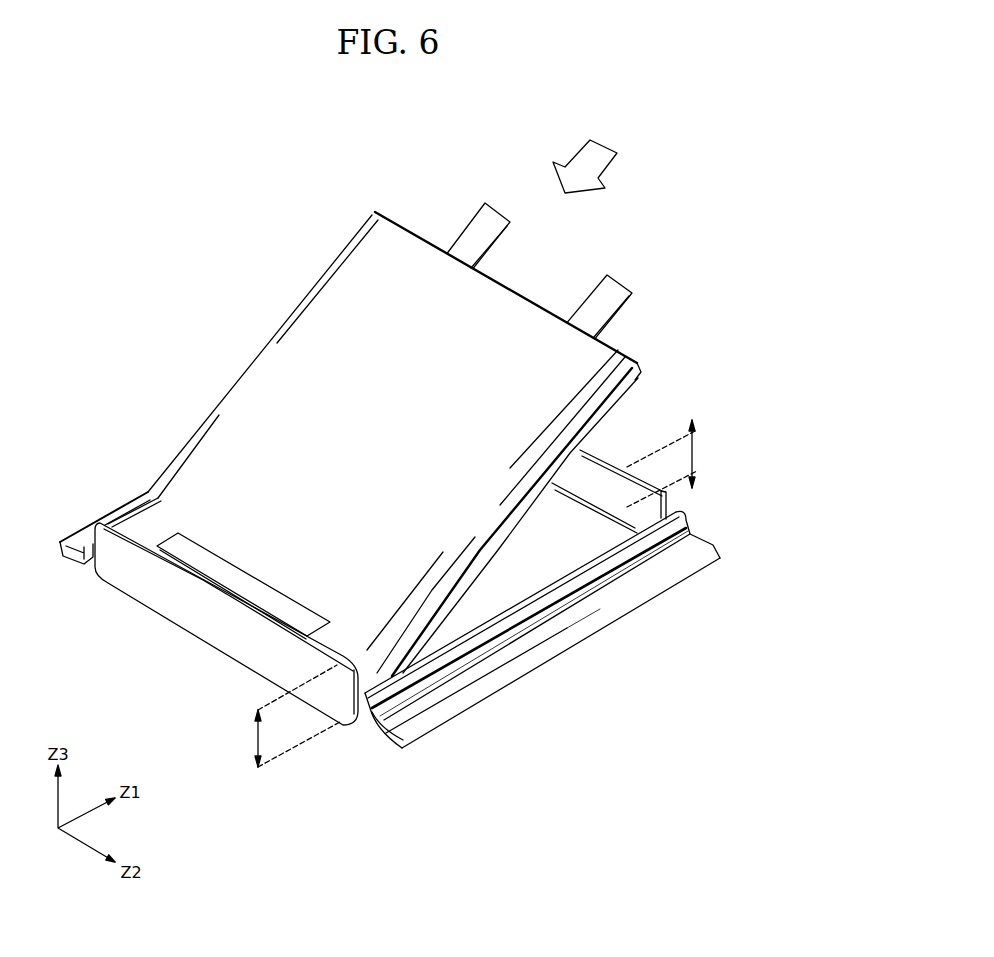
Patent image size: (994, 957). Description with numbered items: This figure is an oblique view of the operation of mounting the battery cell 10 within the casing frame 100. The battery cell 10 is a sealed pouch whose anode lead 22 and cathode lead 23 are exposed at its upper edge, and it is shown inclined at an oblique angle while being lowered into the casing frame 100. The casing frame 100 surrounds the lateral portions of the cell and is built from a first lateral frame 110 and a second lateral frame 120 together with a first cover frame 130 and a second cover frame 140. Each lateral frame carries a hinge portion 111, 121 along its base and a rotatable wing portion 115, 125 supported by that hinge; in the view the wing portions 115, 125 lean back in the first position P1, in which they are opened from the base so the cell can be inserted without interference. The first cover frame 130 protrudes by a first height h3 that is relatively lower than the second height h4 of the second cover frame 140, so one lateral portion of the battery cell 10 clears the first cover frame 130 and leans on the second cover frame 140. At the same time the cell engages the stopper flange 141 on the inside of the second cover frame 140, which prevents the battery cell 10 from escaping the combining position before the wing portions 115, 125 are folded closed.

The battery cell 10 is at (352, 207).
The anode lead 22 is at (480, 217).
The cathode lead 23 is at (600, 288).
The casing frame 100 is at (143, 628).
The first lateral frame 110 is at (101, 499).
The hinge portion 111 is at (90, 537).
The wing portion 115 is at (130, 520).
The second lateral frame 120 is at (542, 634).
The hinge portion 121 is at (403, 683).
The wing portion 125 is at (602, 622).
The first cover frame 130 is at (670, 503).
The second cover frame 140 is at (226, 624).
The flange 141 is at (252, 580).
The first position P1 is at (667, 603).
The first height h3 is at (671, 463).
The second height h4 is at (286, 716).